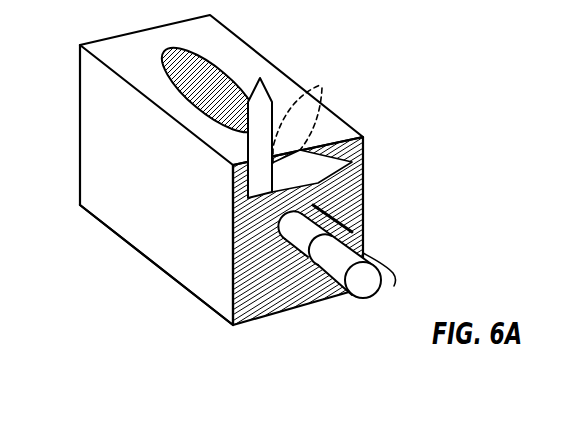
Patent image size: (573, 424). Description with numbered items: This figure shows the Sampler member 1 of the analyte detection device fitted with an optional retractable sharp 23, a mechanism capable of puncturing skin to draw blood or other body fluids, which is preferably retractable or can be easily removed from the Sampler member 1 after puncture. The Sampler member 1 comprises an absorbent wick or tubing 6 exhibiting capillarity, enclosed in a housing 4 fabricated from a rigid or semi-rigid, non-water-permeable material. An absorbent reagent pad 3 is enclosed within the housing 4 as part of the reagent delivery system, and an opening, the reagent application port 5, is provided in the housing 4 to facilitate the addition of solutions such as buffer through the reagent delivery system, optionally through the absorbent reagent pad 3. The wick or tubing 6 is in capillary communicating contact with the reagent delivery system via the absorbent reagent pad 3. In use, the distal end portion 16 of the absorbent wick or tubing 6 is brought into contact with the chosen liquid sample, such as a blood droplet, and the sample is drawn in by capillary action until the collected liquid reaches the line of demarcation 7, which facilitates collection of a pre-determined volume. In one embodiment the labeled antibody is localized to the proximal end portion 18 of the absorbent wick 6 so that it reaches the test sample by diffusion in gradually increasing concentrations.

The Sampler member 1 is at (92, 107).
The absorbent reagent pad 3 is at (352, 202).
The housing 4 is at (98, 223).
The reagent application port 5 is at (260, 117).
The absorbent wick or tubing 6 is at (363, 253).
The line of demarcation 7 is at (288, 300).
The distal end portion 16 is at (314, 318).
The proximal end portion 18 is at (285, 285).
The sharp 23 is at (272, 106).